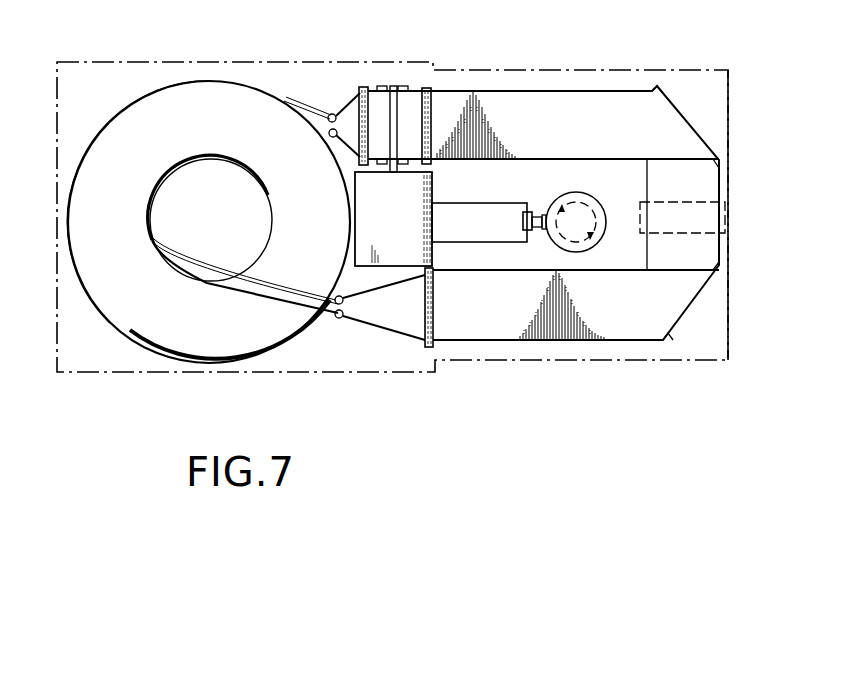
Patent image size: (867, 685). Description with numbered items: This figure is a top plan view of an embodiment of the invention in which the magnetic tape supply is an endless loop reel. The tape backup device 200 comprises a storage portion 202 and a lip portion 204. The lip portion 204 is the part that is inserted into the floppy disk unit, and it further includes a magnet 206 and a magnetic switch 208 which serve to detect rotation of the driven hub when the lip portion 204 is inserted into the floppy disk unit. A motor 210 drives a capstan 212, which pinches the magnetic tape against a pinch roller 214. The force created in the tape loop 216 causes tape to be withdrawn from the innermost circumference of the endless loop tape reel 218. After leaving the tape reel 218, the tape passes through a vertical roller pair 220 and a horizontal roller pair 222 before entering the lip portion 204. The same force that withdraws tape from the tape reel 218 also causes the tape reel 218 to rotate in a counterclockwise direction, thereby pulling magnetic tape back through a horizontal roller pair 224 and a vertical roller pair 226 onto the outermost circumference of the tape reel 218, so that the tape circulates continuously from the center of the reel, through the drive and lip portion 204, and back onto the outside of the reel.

The tape backup device 200 is at (487, 61).
The storage portion 202 is at (130, 62).
The lip portion 204 is at (700, 70).
The magnet 206 is at (547, 216).
The magnetic switch 208 is at (535, 231).
The motor 210 is at (432, 188).
The capstan 212 is at (394, 87).
The pinch roller 214 is at (381, 86).
The tape loop 216 is at (630, 91).
The endless loop tape reel 218 is at (270, 354).
The vertical roller pair 220 is at (342, 318).
The horizontal roller pair 222 is at (433, 348).
The horizontal roller pair 224 is at (364, 88).
The vertical roller pair 226 is at (328, 114).